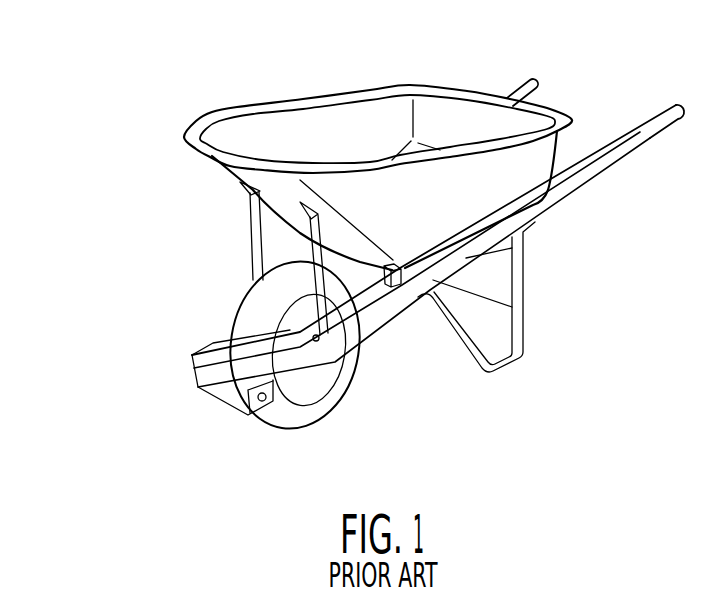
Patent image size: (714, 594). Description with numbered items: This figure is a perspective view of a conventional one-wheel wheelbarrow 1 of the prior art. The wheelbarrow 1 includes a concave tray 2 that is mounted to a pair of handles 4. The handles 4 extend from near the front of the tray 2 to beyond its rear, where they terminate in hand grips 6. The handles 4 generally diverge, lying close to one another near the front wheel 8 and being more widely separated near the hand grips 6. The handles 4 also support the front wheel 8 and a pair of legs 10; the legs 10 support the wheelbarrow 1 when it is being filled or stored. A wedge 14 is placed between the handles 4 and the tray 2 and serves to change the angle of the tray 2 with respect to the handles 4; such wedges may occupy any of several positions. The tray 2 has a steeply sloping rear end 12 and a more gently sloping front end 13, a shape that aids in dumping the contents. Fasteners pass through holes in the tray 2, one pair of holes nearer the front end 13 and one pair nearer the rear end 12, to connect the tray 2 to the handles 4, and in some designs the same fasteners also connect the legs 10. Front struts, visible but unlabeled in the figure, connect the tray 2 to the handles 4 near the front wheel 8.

The wheelbarrow 1 is at (98, 164).
The concave tray 2 is at (323, 128).
The handles 4 is at (237, 337).
The hand grips 6 is at (532, 88).
The front wheel 8 is at (288, 416).
The legs 10 is at (525, 336).
The rear end 12 is at (458, 119).
The front end 13 is at (221, 148).
The wedge 14 is at (406, 275).